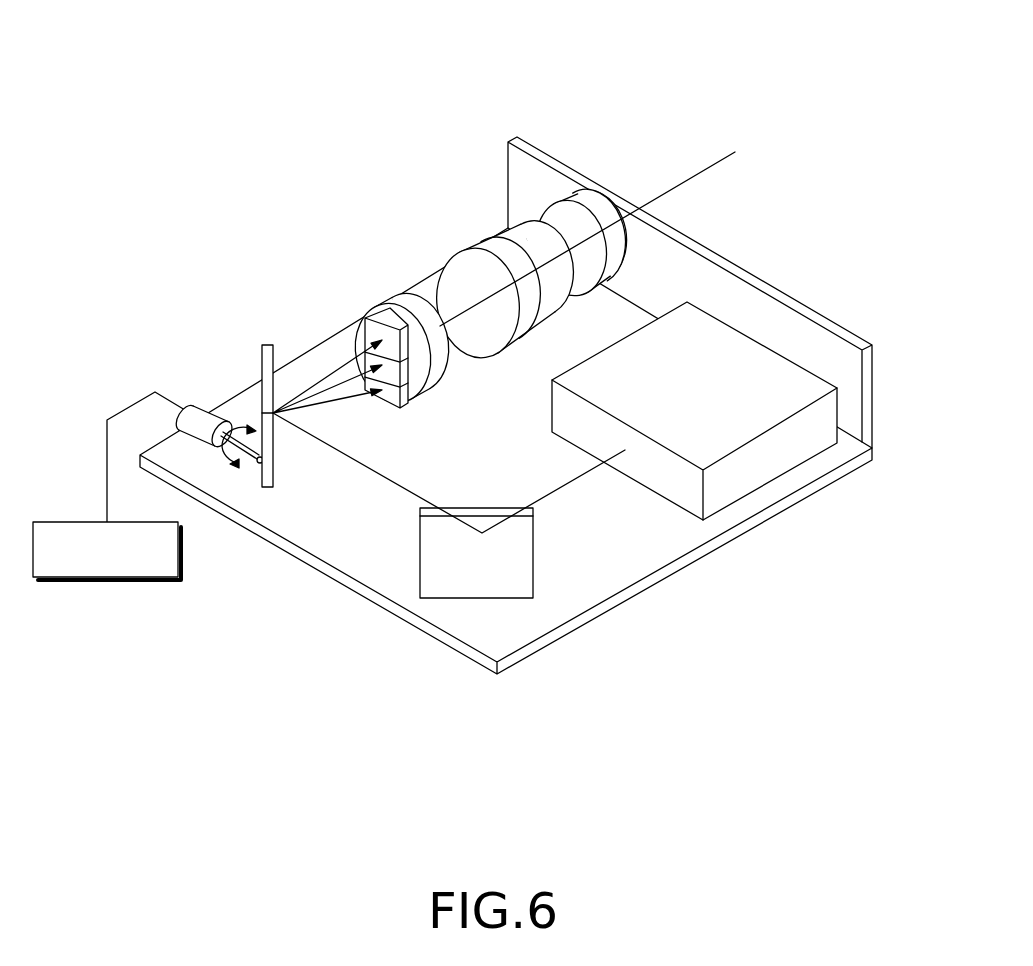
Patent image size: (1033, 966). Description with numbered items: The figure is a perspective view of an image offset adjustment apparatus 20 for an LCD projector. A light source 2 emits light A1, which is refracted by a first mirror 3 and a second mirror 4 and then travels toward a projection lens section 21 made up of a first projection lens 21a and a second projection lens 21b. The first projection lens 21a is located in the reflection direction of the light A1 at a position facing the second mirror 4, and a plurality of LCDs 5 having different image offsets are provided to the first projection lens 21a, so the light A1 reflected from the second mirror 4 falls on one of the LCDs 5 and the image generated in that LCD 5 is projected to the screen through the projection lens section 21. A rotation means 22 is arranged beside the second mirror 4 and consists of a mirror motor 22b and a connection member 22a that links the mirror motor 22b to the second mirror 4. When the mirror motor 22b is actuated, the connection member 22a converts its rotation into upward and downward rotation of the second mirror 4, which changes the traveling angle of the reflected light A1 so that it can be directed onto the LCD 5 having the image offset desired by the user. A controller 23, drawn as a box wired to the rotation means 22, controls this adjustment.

The image offset adjustment apparatus 20 is at (606, 64).
The projection lens section 21 is at (534, 249).
The first projection lens 21a is at (392, 310).
The second projection lens 21b is at (493, 125).
The rotation means 22 is at (215, 352).
The connection member 22a is at (233, 433).
The mirror motor 22b is at (200, 418).
The controller 23 is at (79, 522).
The light source 2 is at (763, 470).
The first mirror 3 is at (462, 580).
The second mirror 4 is at (267, 480).
The LCDs 5 is at (363, 343).
The light A1 is at (560, 488).